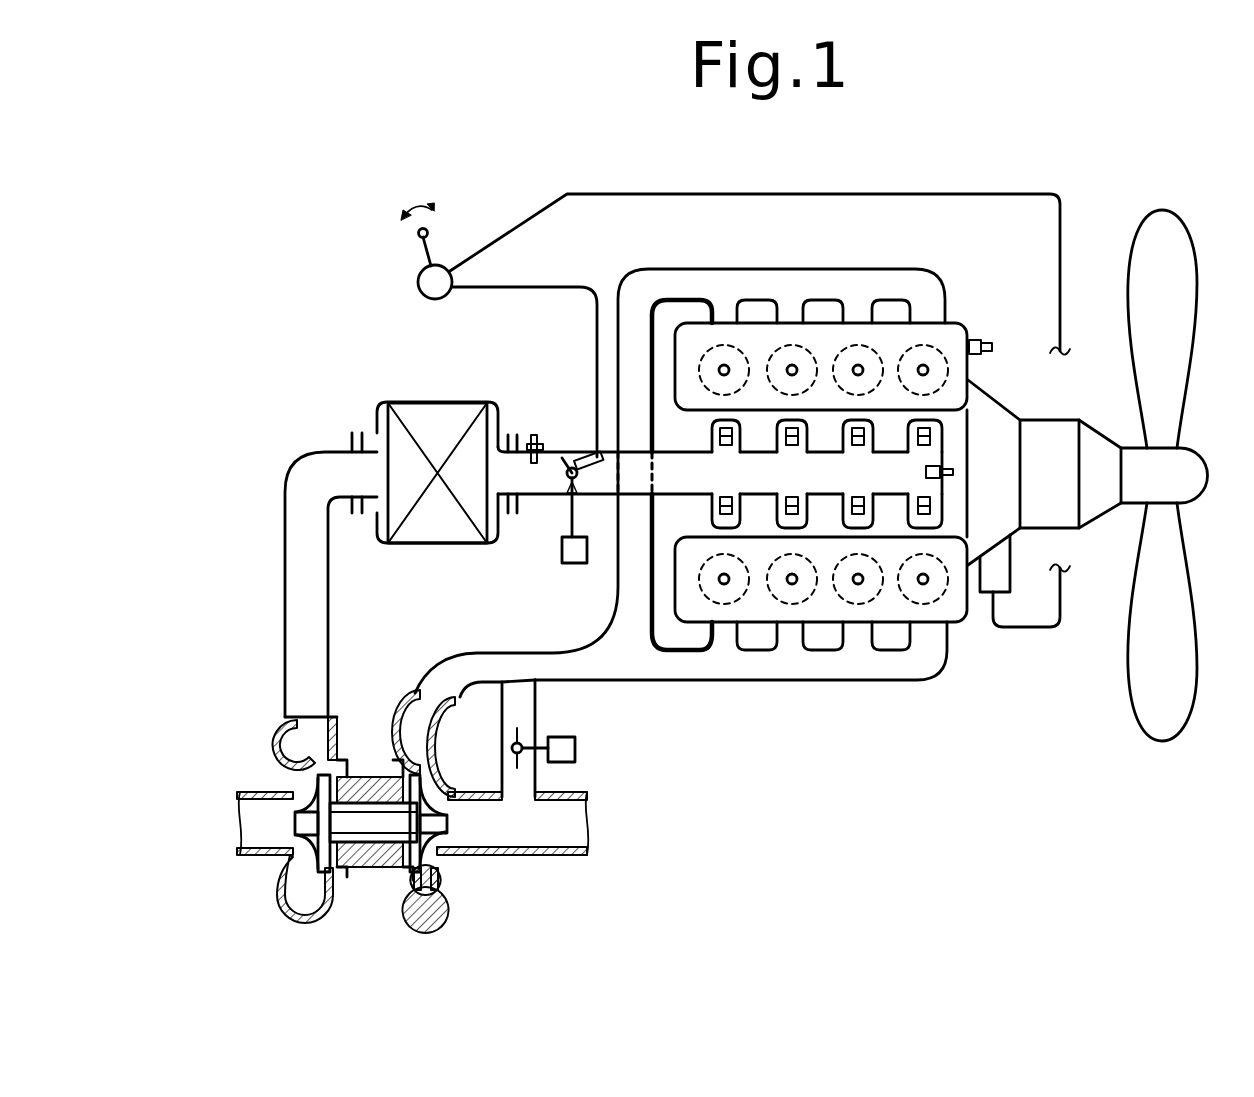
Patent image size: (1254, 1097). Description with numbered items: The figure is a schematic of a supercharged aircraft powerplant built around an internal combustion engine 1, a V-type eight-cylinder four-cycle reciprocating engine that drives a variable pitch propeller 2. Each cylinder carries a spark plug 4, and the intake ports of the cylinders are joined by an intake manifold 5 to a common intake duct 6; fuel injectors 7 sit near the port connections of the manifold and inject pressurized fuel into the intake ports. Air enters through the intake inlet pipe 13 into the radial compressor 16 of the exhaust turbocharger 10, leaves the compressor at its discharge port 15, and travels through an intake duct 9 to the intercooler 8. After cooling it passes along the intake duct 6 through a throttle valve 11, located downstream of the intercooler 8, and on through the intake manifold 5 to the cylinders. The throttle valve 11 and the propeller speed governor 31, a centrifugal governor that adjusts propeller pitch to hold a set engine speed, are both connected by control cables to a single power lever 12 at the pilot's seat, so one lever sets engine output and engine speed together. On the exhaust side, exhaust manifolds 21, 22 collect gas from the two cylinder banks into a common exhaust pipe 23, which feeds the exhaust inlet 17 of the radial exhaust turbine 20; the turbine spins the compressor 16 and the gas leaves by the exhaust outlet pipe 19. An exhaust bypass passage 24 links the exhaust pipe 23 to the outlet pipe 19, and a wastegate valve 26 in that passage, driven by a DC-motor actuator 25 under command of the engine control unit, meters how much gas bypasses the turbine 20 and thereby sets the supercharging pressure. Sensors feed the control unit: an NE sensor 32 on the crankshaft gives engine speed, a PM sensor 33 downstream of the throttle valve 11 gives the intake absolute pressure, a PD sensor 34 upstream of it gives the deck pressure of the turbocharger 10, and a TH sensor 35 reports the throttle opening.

The internal combustion engine 1 is at (968, 324).
The propeller 2 is at (1142, 258).
The spark plugs 4 is at (858, 585).
The intake manifold 5 is at (943, 427).
The intake duct 6 is at (928, 457).
The fuel injectors 7 is at (724, 500).
The intercooler 8 is at (418, 535).
The intake duct 9 is at (297, 578).
The exhaust turbocharger 10 is at (367, 778).
The throttle valve 11 is at (570, 494).
The power lever 12 is at (445, 252).
The intake inlet pipe 13 is at (253, 807).
The discharge port 15 is at (285, 740).
The compressor 16 is at (287, 828).
The exhaust inlet 17 is at (405, 700).
The exhaust outlet pipe 19 is at (570, 833).
The exhaust turbine 20 is at (450, 823).
The exhaust manifold 21 is at (640, 287).
The exhaust manifold 22 is at (927, 665).
The common exhaust pipe 23 is at (478, 660).
The exhaust bypass passage 24 is at (513, 783).
The actuator 25 is at (585, 737).
The wastegate valve 26 is at (513, 737).
The speed governor 31 is at (983, 594).
The NE sensor 32 is at (993, 342).
The PM sensor 33 is at (955, 472).
The PD sensor 34 is at (533, 433).
The TH sensor 35 is at (572, 572).